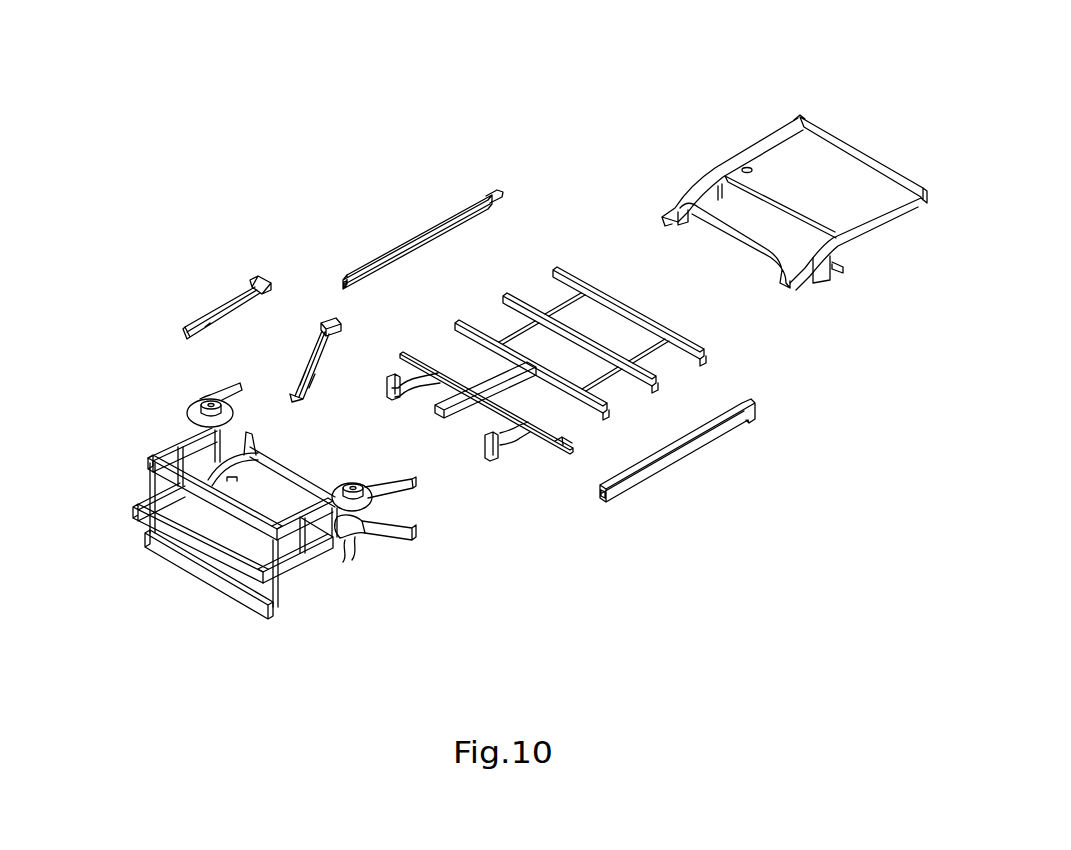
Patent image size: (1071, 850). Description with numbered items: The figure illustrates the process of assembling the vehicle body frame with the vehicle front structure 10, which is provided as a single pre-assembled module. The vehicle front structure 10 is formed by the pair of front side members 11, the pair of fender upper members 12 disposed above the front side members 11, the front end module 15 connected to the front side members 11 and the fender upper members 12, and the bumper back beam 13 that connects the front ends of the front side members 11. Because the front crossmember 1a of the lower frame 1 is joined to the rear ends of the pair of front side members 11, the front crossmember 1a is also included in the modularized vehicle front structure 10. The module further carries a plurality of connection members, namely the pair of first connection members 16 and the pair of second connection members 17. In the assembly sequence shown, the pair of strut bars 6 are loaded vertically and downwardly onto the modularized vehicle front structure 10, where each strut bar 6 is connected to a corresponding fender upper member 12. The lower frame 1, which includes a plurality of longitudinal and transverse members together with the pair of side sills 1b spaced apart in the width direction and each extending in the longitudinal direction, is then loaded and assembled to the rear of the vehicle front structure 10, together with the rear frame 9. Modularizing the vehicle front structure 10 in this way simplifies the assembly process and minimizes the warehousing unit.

The lower frame 1 is at (546, 436).
The front crossmember 1a is at (390, 540).
The side sill 1b is at (419, 232).
The strut bar 6 is at (222, 310).
The rear frame 9 is at (801, 100).
The vehicle front structure 10 is at (231, 491).
The front side member 11 is at (300, 565).
The fender upper member 12 is at (190, 394).
The bumper back beam 13 is at (182, 538).
The front end module 15 is at (198, 592).
The first connection member 16 is at (193, 450).
The second connection member 17 is at (235, 440).